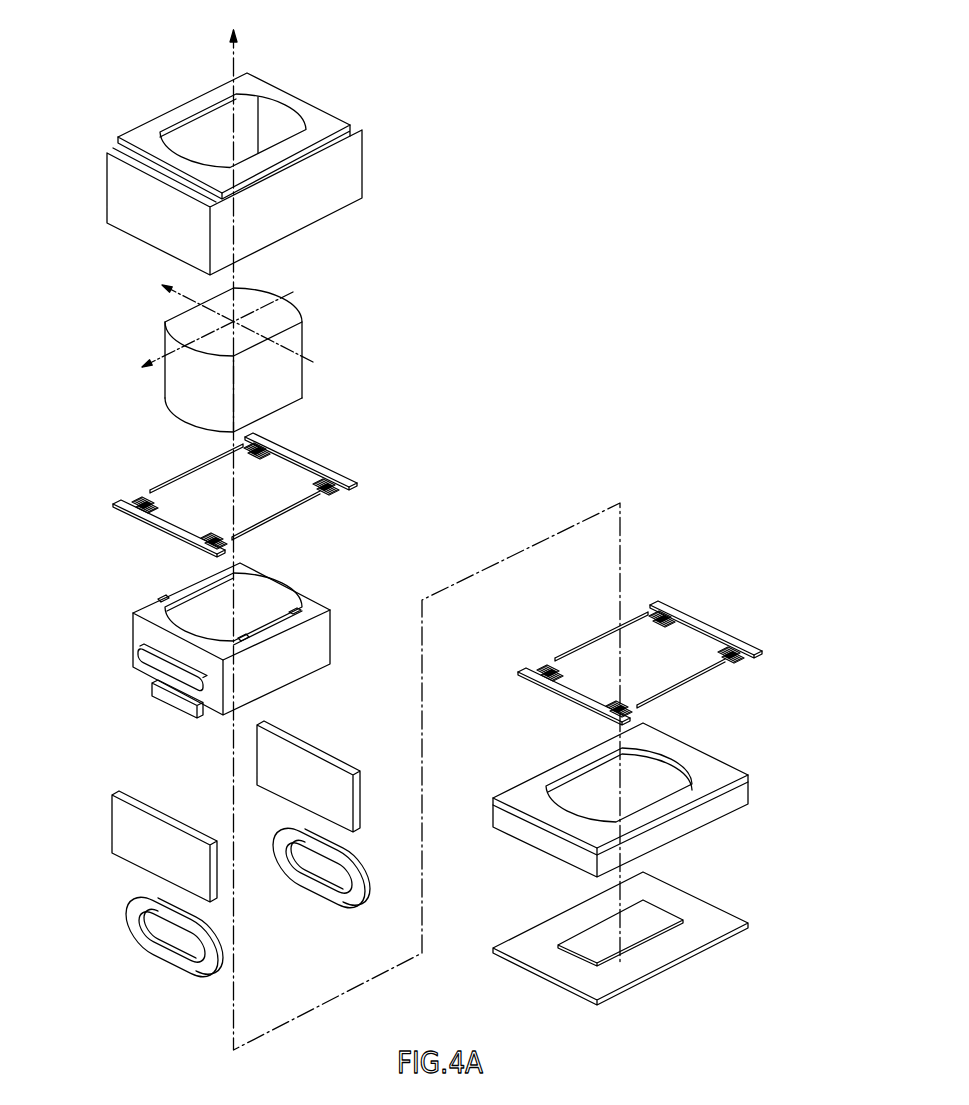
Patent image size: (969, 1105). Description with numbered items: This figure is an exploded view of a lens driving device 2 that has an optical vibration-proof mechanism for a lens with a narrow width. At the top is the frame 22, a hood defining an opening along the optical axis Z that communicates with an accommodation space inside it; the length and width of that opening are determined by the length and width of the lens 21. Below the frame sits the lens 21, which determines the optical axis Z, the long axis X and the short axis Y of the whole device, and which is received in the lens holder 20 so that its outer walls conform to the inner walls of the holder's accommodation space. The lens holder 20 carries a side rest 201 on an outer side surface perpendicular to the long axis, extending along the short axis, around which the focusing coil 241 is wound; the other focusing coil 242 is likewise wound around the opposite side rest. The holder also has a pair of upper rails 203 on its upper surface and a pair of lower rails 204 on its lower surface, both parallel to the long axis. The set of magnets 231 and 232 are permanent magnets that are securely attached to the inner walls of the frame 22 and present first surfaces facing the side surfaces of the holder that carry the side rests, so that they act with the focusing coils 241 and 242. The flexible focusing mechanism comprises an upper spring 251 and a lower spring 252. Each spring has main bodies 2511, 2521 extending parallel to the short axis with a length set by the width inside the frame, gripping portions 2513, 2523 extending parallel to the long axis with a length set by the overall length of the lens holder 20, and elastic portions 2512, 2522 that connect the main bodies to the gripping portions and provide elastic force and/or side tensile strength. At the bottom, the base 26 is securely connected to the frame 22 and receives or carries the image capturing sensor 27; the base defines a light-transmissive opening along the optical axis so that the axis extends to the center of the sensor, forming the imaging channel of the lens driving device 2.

The lens driving device 2 is at (597, 118).
The lens holder 20 is at (317, 563).
The side rest 201 is at (145, 658).
The upper rails 203 is at (180, 588).
The lower rails 204 is at (270, 692).
The lens 21 is at (287, 312).
The frame 22 is at (362, 160).
The magnet 231 is at (123, 823).
The magnet 232 is at (317, 772).
The focusing coil 241 is at (130, 917).
The focusing coil 242 is at (290, 873).
The upper spring 251 is at (347, 473).
The main body 2511 is at (120, 503).
The elastic portion 2512 is at (140, 495).
The gripping portion 2513 is at (180, 475).
The lower spring 252 is at (752, 643).
The main body 2521 is at (527, 672).
The elastic portion 2522 is at (545, 665).
The gripping portion 2523 is at (585, 647).
The base 26 is at (733, 782).
The image capturing sensor 27 is at (657, 912).